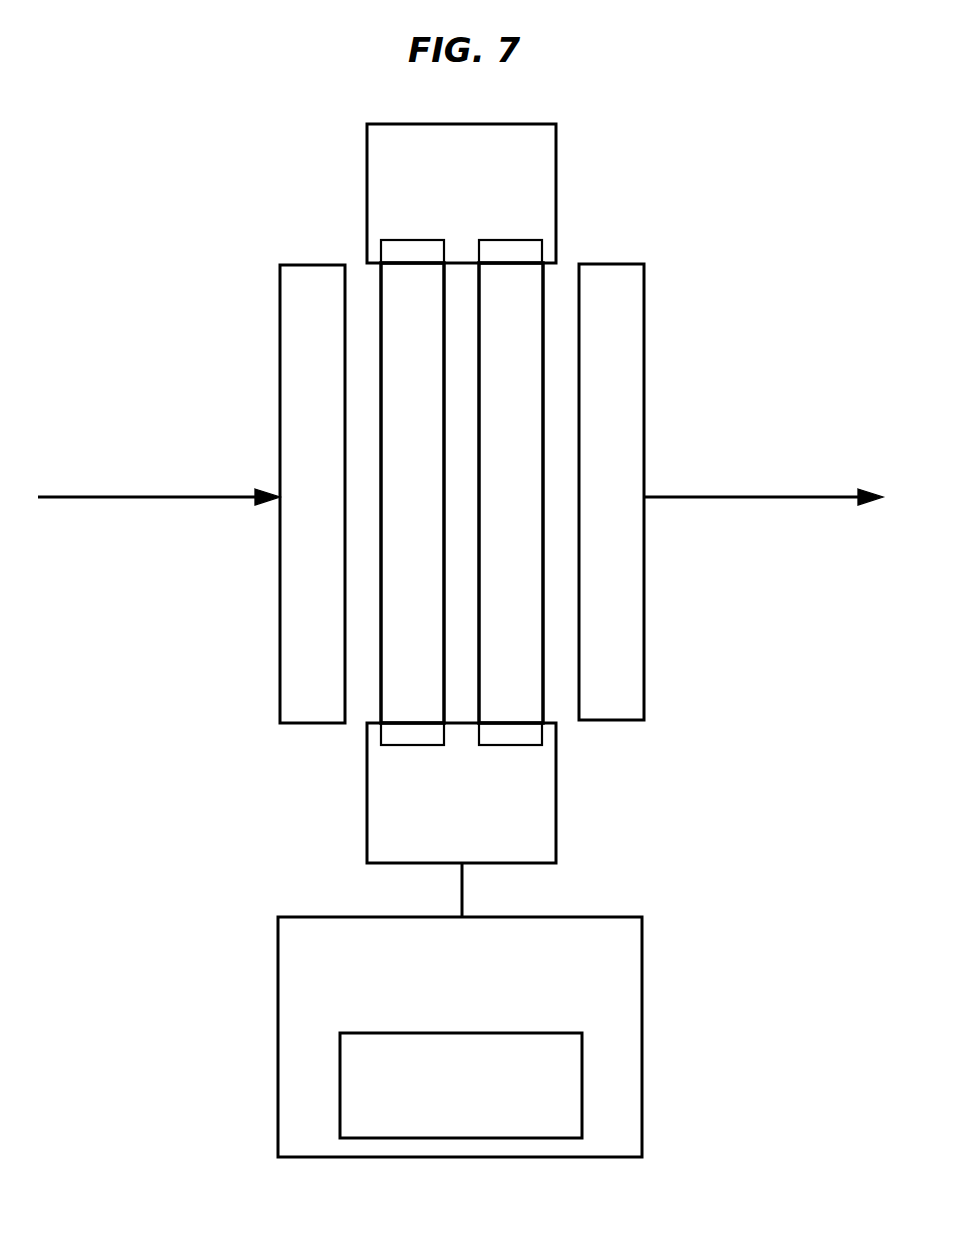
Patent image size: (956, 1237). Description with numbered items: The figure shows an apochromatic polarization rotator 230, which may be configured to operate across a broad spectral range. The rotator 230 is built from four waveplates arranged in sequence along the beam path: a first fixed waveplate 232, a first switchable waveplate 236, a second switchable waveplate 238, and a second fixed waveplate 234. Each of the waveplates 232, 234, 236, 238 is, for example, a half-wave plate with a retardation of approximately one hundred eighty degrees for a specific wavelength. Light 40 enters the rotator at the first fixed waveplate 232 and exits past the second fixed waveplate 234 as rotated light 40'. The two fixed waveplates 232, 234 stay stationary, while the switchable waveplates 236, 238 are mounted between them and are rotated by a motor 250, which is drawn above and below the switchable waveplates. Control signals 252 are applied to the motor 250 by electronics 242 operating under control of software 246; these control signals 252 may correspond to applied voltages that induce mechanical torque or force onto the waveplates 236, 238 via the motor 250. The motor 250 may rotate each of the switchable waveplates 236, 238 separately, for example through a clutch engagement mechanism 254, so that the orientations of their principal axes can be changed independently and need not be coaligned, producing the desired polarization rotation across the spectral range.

The apochromatic polarization rotator 230 is at (116, 137).
The first fixed waveplate 232 is at (280, 633).
The second fixed waveplate 234 is at (644, 643).
The first switchable waveplate 236 is at (381, 706).
The second switchable waveplate 238 is at (543, 703).
The input light beam 40 is at (159, 526).
The output light beam 40' is at (763, 528).
The electronics 242 is at (484, 995).
The software 246 is at (484, 1127).
The motor 250 is at (438, 847).
The control signals 252 is at (462, 887).
The clutch engagement mechanism 254 is at (527, 253).